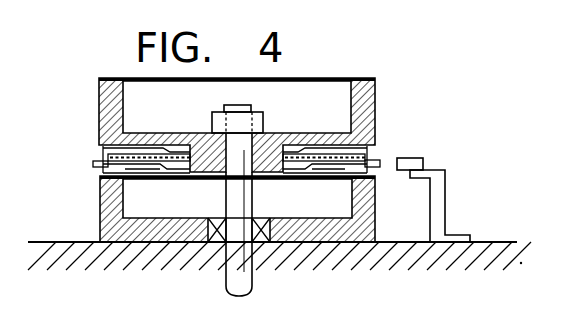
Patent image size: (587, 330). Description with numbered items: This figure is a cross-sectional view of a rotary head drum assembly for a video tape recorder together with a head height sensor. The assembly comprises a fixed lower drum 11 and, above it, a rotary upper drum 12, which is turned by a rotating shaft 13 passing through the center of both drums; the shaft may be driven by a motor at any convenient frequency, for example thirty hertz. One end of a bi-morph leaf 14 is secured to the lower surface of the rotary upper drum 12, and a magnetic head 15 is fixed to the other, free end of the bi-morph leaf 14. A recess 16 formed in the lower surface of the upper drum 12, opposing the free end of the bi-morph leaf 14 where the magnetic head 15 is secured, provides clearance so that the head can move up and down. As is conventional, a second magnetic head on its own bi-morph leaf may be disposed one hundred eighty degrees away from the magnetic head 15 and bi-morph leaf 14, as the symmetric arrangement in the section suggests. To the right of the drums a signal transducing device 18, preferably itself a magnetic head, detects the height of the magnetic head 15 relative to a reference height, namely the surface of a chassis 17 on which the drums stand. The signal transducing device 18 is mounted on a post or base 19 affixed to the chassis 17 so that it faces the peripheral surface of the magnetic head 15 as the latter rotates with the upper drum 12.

The fixed lower drum 11 is at (100, 197).
The rotary upper drum 12 is at (98, 104).
The rotating shaft 13 is at (253, 272).
The bi-morph leaf 14 is at (370, 157).
The magnetic head 15 is at (378, 167).
The recess 16 is at (371, 149).
The chassis 17 is at (497, 241).
The signal transducing device 18 is at (424, 163).
The post or base 19 is at (446, 196).